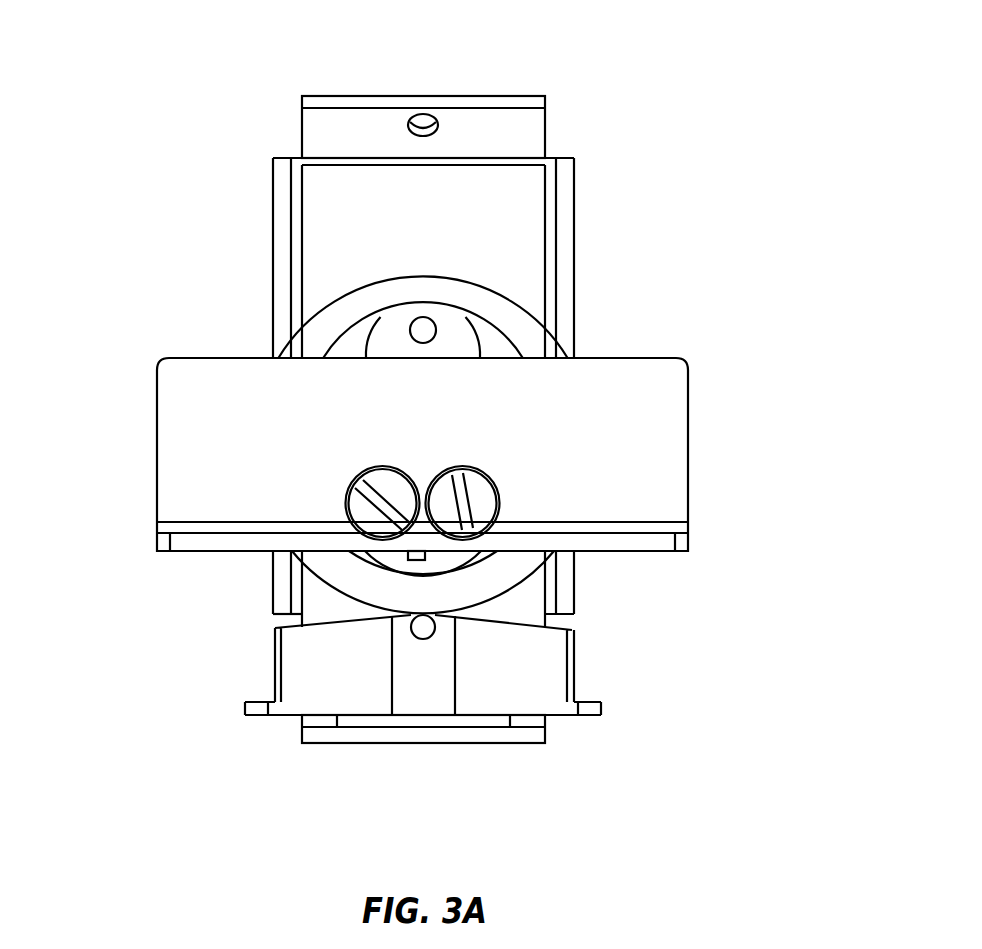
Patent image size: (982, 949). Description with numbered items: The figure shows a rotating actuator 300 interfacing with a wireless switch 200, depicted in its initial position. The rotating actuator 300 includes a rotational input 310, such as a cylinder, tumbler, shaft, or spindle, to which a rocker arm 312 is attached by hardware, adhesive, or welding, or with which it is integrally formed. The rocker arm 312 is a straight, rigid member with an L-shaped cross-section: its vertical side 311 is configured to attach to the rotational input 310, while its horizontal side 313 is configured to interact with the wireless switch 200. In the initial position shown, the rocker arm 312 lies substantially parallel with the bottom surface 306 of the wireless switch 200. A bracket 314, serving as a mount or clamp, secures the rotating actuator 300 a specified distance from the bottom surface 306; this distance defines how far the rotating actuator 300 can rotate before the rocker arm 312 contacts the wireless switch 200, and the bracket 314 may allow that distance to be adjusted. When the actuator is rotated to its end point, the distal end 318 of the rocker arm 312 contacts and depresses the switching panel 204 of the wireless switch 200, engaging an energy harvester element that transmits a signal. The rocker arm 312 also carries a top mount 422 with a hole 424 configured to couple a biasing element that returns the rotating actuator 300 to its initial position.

The wireless switch 200 is at (430, 690).
The switching panel 204 is at (320, 621).
The rotating actuator 300 is at (686, 194).
The bottom surface 306 is at (573, 716).
The rotational input 310 is at (400, 563).
The vertical side 311 is at (187, 440).
The rocker arm 312 is at (627, 438).
The horizontal side 313 is at (217, 543).
The bracket 314 is at (397, 190).
The distal end 318 is at (682, 542).
The top mount 422 is at (393, 340).
The hole 424 is at (425, 327).